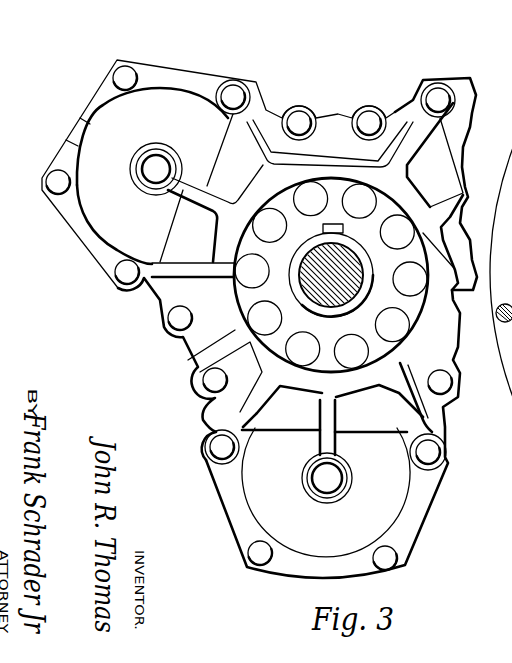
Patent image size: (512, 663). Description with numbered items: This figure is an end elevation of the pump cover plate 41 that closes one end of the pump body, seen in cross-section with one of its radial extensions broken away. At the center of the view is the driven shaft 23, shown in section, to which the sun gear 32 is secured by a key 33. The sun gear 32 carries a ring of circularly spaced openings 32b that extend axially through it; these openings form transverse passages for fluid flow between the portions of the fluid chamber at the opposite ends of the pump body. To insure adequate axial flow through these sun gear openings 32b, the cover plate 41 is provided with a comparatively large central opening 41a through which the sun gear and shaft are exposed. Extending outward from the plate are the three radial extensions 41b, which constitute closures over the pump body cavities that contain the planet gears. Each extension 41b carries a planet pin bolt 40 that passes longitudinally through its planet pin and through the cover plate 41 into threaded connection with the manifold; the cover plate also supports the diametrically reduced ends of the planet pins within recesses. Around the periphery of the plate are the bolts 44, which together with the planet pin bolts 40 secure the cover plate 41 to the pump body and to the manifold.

The driven shaft 23 is at (318, 262).
The sun gear 32 is at (247, 300).
The sun gear openings 32b is at (258, 323).
The key 33 is at (322, 228).
The planet pin bolt 40 is at (151, 163).
The pump cover plate 41 is at (460, 143).
The central opening 41a is at (331, 177).
The radial extensions 41b is at (175, 103).
The bolts 44 is at (128, 76).